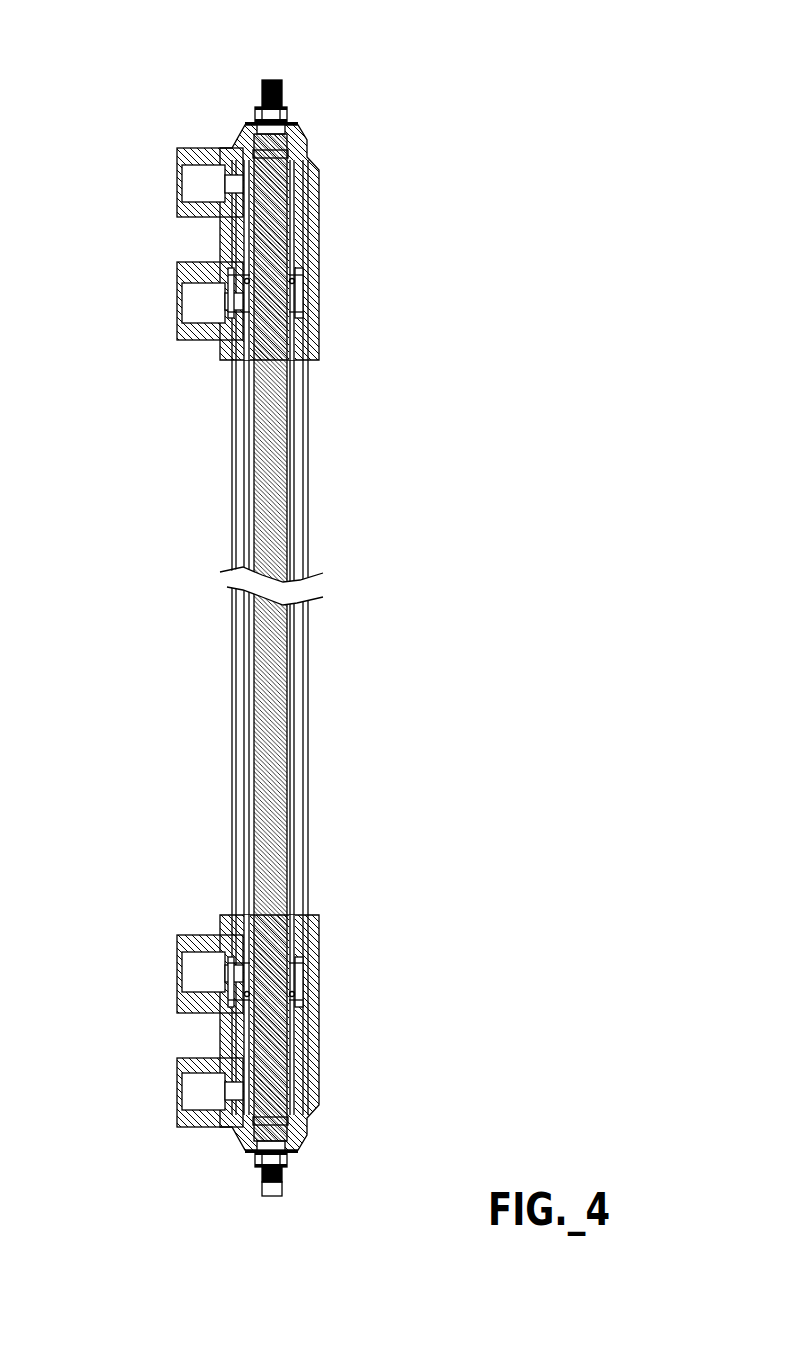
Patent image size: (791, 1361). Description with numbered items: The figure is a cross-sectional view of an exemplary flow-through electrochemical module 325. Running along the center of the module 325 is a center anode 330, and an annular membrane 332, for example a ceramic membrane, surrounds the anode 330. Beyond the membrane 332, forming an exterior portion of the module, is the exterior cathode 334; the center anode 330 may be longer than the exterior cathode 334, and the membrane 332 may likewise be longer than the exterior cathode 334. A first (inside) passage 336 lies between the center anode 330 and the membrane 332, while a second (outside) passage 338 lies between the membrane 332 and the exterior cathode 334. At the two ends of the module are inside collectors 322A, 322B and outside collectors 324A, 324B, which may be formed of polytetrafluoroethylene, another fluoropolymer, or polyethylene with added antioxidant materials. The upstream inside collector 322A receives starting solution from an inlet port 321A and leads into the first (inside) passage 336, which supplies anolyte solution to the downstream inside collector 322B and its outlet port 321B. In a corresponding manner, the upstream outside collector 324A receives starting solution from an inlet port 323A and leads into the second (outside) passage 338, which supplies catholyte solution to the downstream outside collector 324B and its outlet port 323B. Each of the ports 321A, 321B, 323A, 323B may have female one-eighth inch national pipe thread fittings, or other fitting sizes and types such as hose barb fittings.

The flow-through electrochemical module 325 is at (488, 62).
The center anode 330 is at (272, 80).
The outlet port 321B is at (177, 158).
The outlet port 323B is at (177, 278).
The downstream inside collector 322B is at (320, 210).
The downstream outside collector 324B is at (320, 305).
The exterior cathode 334 is at (312, 558).
The first (inside) passage 336 is at (220, 572).
The second (outside) passage 338 is at (227, 587).
The membrane 332 is at (292, 602).
The inlet port 323A is at (177, 940).
The upstream outside collector 324A is at (320, 967).
The inlet port 321A is at (177, 1072).
The upstream inside collector 322A is at (320, 1063).